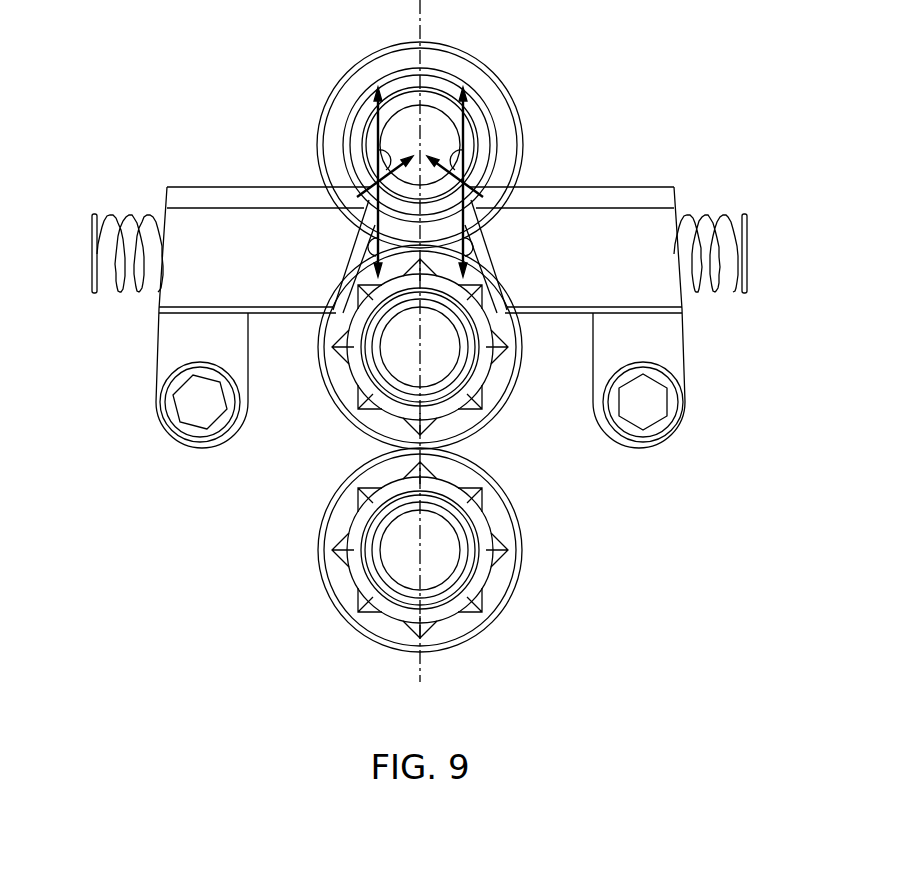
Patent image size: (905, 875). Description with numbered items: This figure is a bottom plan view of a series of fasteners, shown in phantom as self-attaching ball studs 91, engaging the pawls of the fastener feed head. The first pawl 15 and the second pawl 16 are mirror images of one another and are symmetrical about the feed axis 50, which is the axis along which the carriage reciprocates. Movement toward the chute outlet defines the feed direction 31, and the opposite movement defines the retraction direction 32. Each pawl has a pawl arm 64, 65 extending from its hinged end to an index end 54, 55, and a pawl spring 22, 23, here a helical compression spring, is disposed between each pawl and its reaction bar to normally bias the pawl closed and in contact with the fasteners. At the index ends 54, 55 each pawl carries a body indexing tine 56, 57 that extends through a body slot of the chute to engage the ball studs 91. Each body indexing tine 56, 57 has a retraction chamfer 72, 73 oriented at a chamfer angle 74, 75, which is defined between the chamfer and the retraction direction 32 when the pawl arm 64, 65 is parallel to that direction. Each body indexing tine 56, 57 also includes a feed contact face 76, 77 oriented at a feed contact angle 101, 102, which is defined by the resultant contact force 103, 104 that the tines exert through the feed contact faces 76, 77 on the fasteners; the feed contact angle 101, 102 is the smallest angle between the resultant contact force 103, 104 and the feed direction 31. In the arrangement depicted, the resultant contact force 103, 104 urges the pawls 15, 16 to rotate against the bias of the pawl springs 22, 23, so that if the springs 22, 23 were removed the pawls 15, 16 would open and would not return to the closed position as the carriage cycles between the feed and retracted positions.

The first pawl 15 is at (647, 203).
The second pawl 16 is at (187, 198).
The pawl spring 22 is at (743, 232).
The pawl spring 23 is at (100, 217).
The feed direction 31 is at (376, 108).
The retraction direction 32 is at (363, 243).
The feed axis 50 is at (415, 663).
The index end 54 is at (597, 192).
The index end 55 is at (265, 198).
The body indexing tine 56 is at (555, 210).
The body indexing tine 57 is at (263, 222).
The pawl arm 64 is at (670, 340).
The pawl arm 65 is at (183, 332).
The retraction chamfer 72 is at (500, 292).
The retraction chamfer 73 is at (340, 292).
The chamfer angle 74 is at (483, 270).
The chamfer angle 75 is at (357, 272).
The feed contact face 76 is at (480, 197).
The feed contact face 77 is at (360, 197).
The self-attaching ball stud 91 is at (442, 352).
The feed contact angle 101 is at (451, 152).
The feed contact angle 102 is at (389, 152).
The resultant contact force 103 is at (449, 162).
The resultant contact force 104 is at (391, 162).